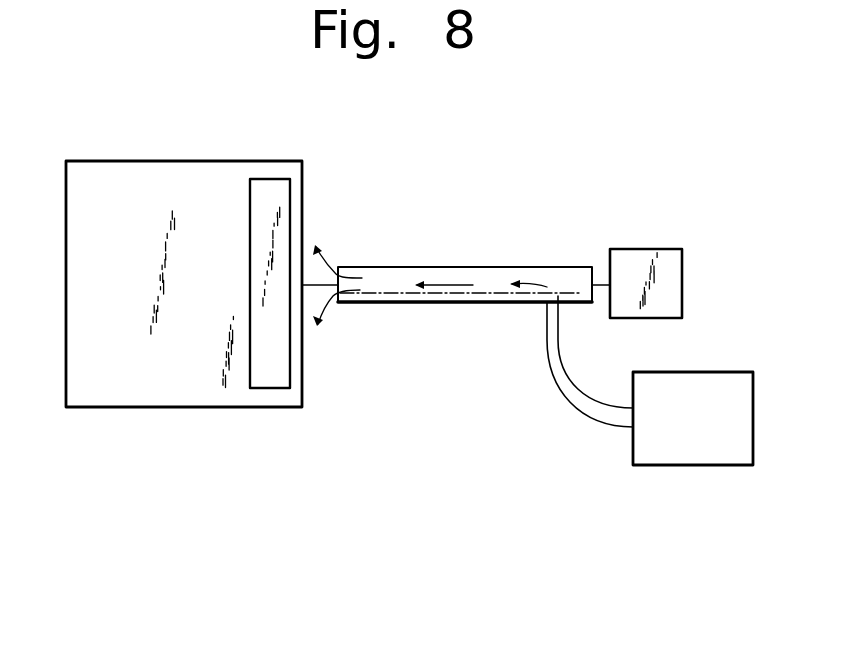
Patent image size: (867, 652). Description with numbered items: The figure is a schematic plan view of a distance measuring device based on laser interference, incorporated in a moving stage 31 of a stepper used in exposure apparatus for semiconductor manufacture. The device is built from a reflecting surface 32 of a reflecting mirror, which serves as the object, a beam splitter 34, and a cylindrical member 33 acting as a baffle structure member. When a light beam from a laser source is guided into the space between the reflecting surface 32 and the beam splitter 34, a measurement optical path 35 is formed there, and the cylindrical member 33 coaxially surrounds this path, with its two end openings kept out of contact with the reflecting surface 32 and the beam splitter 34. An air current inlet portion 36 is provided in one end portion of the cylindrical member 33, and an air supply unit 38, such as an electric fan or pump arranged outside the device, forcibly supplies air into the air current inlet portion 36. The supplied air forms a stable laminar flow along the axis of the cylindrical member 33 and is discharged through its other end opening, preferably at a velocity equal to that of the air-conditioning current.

The moving stage 31 is at (167, 397).
The reflecting surface 32 is at (290, 195).
The cylindrical member 33 is at (463, 278).
The beam splitter 34 is at (640, 260).
The measurement optical path 35 is at (308, 287).
The air current inlet portion 36 is at (545, 322).
The air supply unit 38 is at (693, 418).